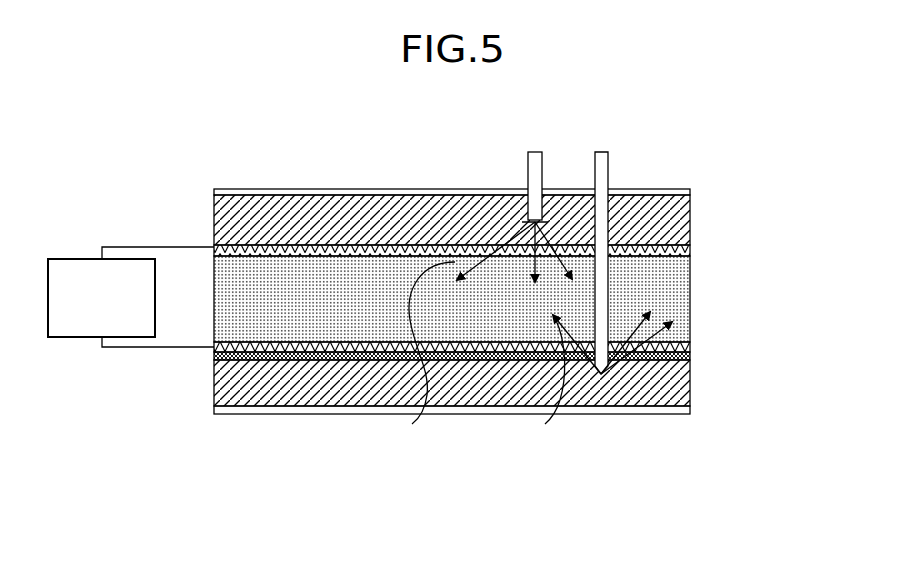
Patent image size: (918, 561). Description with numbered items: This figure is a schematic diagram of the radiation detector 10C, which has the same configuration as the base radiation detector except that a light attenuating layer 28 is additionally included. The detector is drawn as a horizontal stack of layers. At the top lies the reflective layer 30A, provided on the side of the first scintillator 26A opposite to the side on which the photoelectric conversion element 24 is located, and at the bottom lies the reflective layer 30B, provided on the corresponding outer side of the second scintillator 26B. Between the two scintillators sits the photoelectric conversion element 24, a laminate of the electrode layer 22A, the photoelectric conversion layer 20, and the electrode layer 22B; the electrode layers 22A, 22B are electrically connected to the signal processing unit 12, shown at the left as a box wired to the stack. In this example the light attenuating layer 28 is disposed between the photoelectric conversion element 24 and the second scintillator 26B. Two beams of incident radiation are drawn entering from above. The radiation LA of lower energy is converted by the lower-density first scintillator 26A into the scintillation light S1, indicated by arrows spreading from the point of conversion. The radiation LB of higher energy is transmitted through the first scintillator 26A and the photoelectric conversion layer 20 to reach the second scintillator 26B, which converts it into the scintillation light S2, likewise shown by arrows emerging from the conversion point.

The radiation detector 10C is at (698, 130).
The signal processing unit 12 is at (62, 258).
The photoelectric conversion layer 20 is at (690, 297).
The electrode layer 22A is at (690, 253).
The electrode layer 22B is at (690, 347).
The photoelectric conversion element 24 is at (806, 245).
The first scintillator 26A is at (690, 220).
The second scintillator 26B is at (690, 384).
The light attenuating layer 28 is at (690, 356).
The reflective layer 30A is at (690, 191).
The reflective layer 30B is at (690, 411).
The radiation LA is at (535, 152).
The radiation LB is at (600, 152).
The scintillation light S1 is at (427, 363).
The scintillation light S2 is at (547, 391).